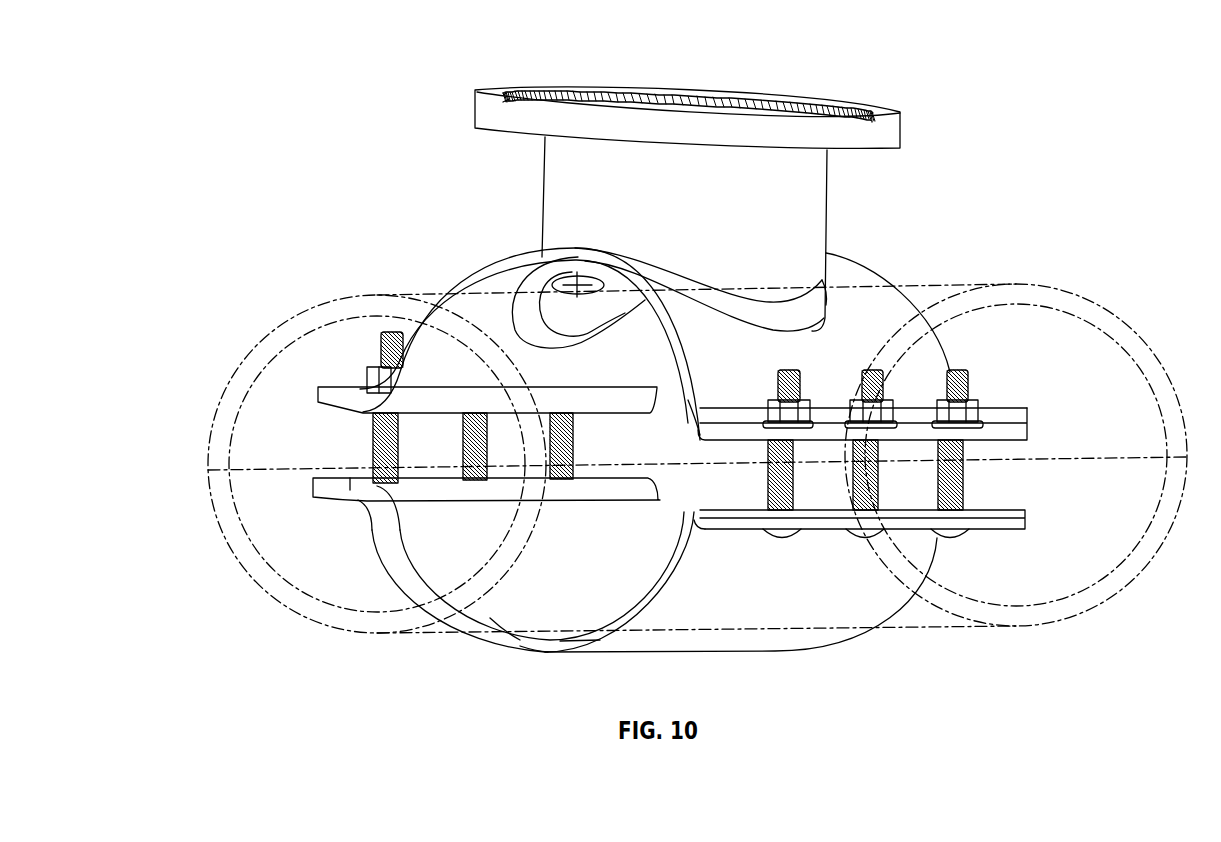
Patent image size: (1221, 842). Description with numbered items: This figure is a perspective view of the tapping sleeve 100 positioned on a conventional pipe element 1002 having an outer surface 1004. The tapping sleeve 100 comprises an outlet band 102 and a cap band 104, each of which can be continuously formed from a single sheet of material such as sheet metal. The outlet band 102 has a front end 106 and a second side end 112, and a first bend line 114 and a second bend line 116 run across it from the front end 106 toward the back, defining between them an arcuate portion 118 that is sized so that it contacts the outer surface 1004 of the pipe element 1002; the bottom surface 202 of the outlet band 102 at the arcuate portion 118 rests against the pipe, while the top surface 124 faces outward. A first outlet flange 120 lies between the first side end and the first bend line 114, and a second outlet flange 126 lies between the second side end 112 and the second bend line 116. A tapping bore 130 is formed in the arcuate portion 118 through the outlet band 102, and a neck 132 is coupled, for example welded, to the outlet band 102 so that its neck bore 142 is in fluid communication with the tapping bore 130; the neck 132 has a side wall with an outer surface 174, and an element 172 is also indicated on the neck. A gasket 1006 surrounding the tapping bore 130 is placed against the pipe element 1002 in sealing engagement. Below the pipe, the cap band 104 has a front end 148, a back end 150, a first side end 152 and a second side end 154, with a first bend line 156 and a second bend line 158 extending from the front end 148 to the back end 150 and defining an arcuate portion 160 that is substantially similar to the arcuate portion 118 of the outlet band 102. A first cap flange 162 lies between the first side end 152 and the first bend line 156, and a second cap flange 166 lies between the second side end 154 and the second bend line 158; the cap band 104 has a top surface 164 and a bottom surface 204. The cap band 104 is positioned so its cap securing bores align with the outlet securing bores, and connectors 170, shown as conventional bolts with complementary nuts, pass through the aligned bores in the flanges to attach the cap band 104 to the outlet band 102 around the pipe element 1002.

The tapping sleeve 100 is at (378, 69).
The outlet band 102 is at (497, 262).
The cap band 104 is at (750, 635).
The front end 106 is at (541, 257).
The second side end 112 is at (1027, 432).
The first bend line 114 is at (403, 407).
The second bend line 116 is at (697, 420).
The arcuate portion 118 is at (853, 262).
The first outlet flange 120 is at (318, 400).
The top surface 124 is at (822, 262).
The second outlet flange 126 is at (995, 422).
The tapping bore 130 is at (578, 278).
The neck 132 is at (588, 158).
The neck bore 142 is at (701, 103).
The front end 148 is at (600, 630).
The back end 150 is at (1025, 522).
The first side end 152 is at (312, 490).
The second side end 154 is at (793, 537).
The first bend line 156 is at (373, 503).
The second bend line 158 is at (700, 523).
The arcuate portion 160 is at (530, 642).
The first cap flange 162 is at (357, 483).
The top surface 164 is at (523, 623).
The second cap flange 166 is at (982, 533).
The connectors 170 is at (396, 332).
The outlet flange 172 is at (817, 103).
The outer surface 174 is at (814, 197).
The bottom surface 202 is at (487, 280).
The bottom surface 204 is at (680, 632).
The pipe element 1002 is at (1060, 288).
The outer surface 1004 is at (1108, 338).
The gasket 1006 is at (533, 337).